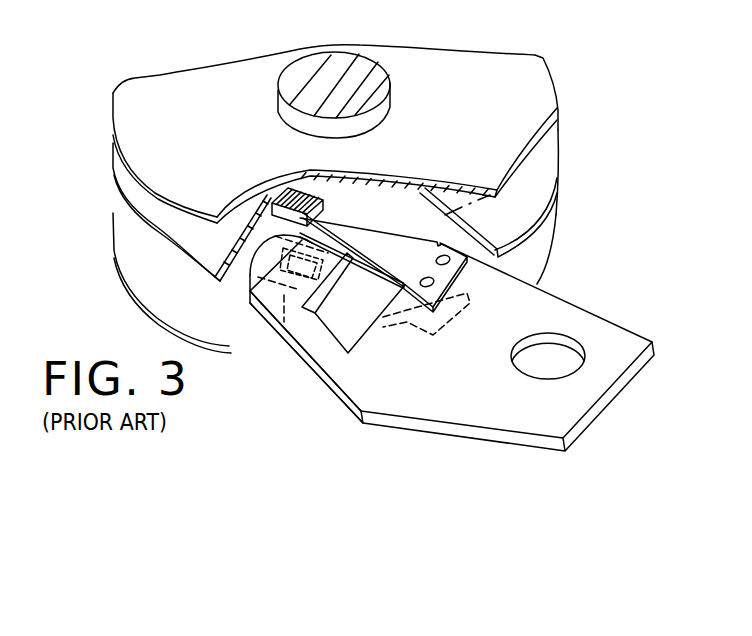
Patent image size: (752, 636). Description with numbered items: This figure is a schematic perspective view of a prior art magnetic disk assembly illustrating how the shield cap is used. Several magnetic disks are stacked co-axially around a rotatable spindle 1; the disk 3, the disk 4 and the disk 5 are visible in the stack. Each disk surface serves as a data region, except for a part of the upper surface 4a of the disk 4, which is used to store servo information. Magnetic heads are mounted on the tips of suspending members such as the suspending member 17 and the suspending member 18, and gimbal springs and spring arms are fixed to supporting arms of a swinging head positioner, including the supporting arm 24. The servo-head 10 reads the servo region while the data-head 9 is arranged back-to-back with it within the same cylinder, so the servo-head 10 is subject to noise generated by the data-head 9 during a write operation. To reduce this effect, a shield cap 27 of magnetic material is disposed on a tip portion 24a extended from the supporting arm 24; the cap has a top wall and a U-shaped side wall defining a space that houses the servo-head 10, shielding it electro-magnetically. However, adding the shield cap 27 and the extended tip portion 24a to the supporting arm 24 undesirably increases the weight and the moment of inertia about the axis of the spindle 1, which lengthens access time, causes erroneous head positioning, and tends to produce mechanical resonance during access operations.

The spindle 1 is at (320, 62).
The disk 3 is at (555, 97).
The disk 4 is at (557, 162).
The upper surface 4a is at (517, 213).
The disk 5 is at (550, 266).
The data-head 9 is at (234, 246).
The servo-head 10 is at (278, 334).
The suspending member 17 is at (385, 232).
The suspending member 18 is at (370, 303).
The supporting arm 24 is at (609, 325).
The tip portion 24a is at (331, 383).
The shield cap 27 is at (316, 313).